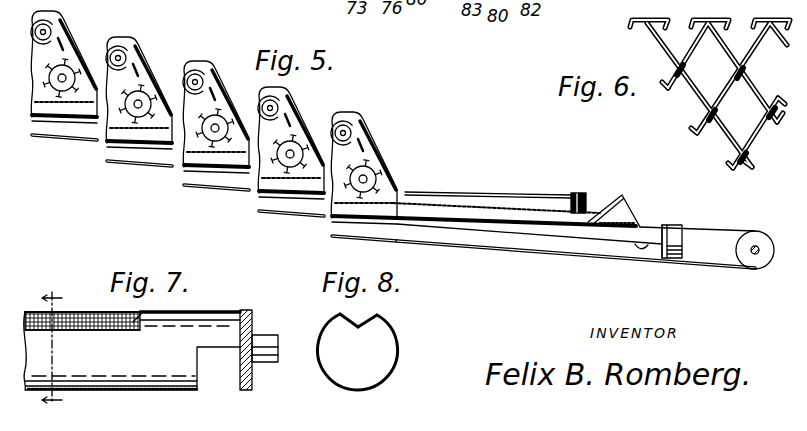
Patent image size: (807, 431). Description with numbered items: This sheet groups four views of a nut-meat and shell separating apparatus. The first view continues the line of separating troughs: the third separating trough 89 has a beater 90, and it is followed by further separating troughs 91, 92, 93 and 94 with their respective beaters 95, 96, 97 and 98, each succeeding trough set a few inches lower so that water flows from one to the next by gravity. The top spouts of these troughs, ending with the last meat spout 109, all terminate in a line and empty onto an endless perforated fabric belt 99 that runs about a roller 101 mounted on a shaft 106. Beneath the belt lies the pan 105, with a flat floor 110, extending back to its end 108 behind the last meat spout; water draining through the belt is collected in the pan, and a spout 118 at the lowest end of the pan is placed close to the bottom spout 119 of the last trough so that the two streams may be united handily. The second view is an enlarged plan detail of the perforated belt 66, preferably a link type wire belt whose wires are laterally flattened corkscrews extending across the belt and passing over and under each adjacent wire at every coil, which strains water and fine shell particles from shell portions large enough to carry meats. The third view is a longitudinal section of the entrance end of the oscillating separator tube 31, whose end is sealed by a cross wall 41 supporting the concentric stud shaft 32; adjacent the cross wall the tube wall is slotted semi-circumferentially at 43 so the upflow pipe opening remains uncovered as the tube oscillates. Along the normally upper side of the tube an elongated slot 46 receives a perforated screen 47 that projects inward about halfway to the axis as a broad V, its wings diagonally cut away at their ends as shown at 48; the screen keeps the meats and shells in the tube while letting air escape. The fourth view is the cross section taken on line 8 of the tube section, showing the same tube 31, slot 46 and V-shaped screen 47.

In FIG. 7, the section line 8— 8 is at (52, 348).
In FIG. 7, the oscillating separator tube 31 is at (141, 397).
In FIG. 8, the oscillating separator tube 31 is at (329, 386).
In FIG. 7, the concentric stud shaft 32 is at (265, 338).
In FIG. 7, the cross wall 41 is at (256, 365).
In FIG. 7, the slot 43 is at (190, 368).
In FIG. 7, the elongated slot 46 is at (145, 313).
In FIG. 8, the elongated slot 46 is at (343, 316).
In FIG. 7, the perforated screen 47 is at (83, 329).
In FIG. 8, the perforated screen 47 is at (368, 318).
In FIG. 7, the diagonally cut-away end 48 is at (135, 323).
In FIG. 6, the perforated belt 66 is at (693, 106).
In FIG. 5, the third separating trough 89 is at (40, 106).
In FIG. 5, the beater 90 is at (70, 67).
In FIG. 5, the separating trough 91 is at (107, 136).
In FIG. 5, the separating trough 92 is at (183, 162).
In FIG. 5, the separating trough 93 is at (257, 190).
In FIG. 5, the separating trough 94 is at (331, 214).
In FIG. 5, the beater 95 is at (146, 95).
In FIG. 5, the beater 96 is at (219, 117).
In FIG. 5, the beater 97 is at (300, 142).
In FIG. 5, the beater 98 is at (385, 168).
In FIG. 5, the endless perforated fabric belt 99 is at (551, 252).
In FIG. 5, the roller 101 is at (740, 246).
In FIG. 5, the pan 105 is at (487, 229).
In FIG. 5, the shaft 106 is at (756, 250).
In FIG. 5, the pan end 108 is at (686, 243).
In FIG. 5, the last meat spout 109 is at (586, 194).
In FIG. 5, the floor 110 is at (641, 246).
In FIG. 5, the spout 118 is at (680, 264).
In FIG. 5, the bottom spout 119 is at (594, 215).